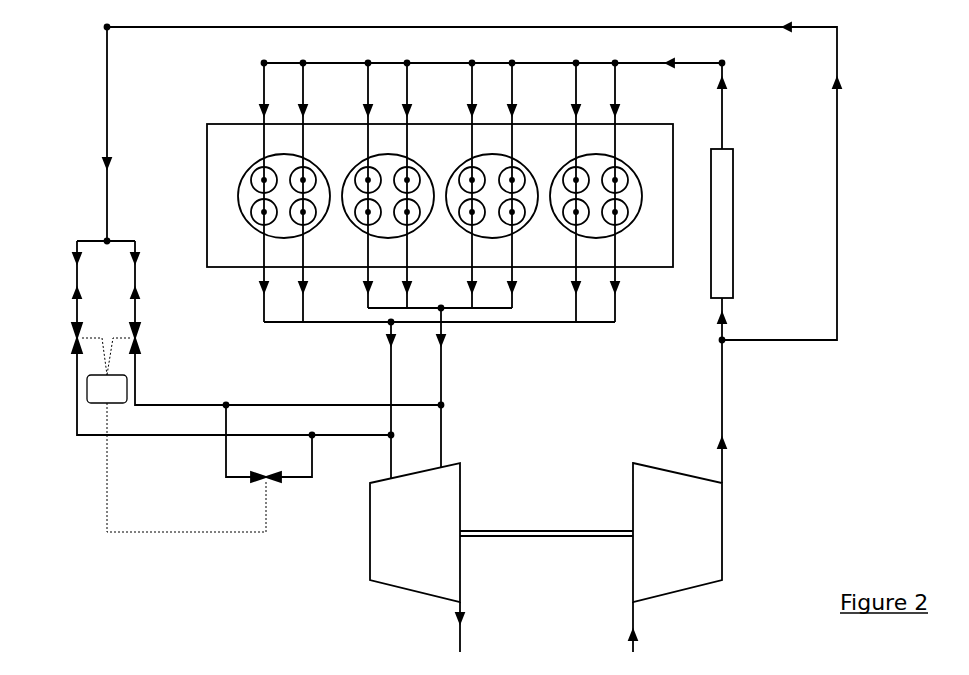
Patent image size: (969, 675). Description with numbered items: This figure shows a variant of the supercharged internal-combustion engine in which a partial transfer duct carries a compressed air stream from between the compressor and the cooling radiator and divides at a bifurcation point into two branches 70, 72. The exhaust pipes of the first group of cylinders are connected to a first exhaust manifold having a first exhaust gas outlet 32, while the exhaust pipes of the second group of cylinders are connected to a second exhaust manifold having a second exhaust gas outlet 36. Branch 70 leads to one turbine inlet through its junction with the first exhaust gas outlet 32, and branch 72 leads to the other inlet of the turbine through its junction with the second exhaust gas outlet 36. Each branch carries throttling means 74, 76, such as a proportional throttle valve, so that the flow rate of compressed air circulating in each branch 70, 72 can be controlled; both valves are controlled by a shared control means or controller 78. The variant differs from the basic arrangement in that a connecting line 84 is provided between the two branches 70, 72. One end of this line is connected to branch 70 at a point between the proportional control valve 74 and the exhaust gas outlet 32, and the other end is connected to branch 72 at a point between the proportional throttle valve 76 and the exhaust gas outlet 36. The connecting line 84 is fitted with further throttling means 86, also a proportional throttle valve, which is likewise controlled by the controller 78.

The first exhaust gas outlet 32 is at (390, 388).
The second exhaust gas outlet 36 is at (442, 393).
The branch 70 is at (72, 410).
The branch 72 is at (137, 375).
The throttling means 74 is at (73, 325).
The throttling means 76 is at (137, 325).
The controller 78 is at (174, 435).
The connecting line 84 is at (223, 456).
The throttling means 86 is at (275, 480).